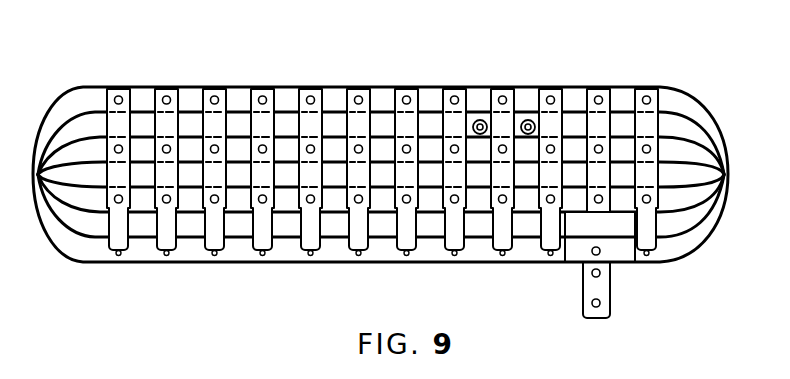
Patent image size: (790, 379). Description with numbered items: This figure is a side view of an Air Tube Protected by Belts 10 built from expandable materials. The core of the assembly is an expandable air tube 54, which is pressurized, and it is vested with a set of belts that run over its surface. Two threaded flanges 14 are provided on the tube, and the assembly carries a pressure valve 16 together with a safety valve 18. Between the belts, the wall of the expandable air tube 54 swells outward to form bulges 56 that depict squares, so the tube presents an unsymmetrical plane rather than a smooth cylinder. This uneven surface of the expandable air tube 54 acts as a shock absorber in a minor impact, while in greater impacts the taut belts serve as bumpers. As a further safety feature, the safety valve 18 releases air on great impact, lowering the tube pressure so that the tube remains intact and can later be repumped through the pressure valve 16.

The Air Tube Protected by Belts 10 is at (381, 266).
The threaded flanges 14 is at (527, 120).
The pressure valve 16 is at (528, 120).
The safety valve 18 is at (480, 120).
The expandable air tube 54 is at (142, 123).
The bulges 56 is at (382, 87).